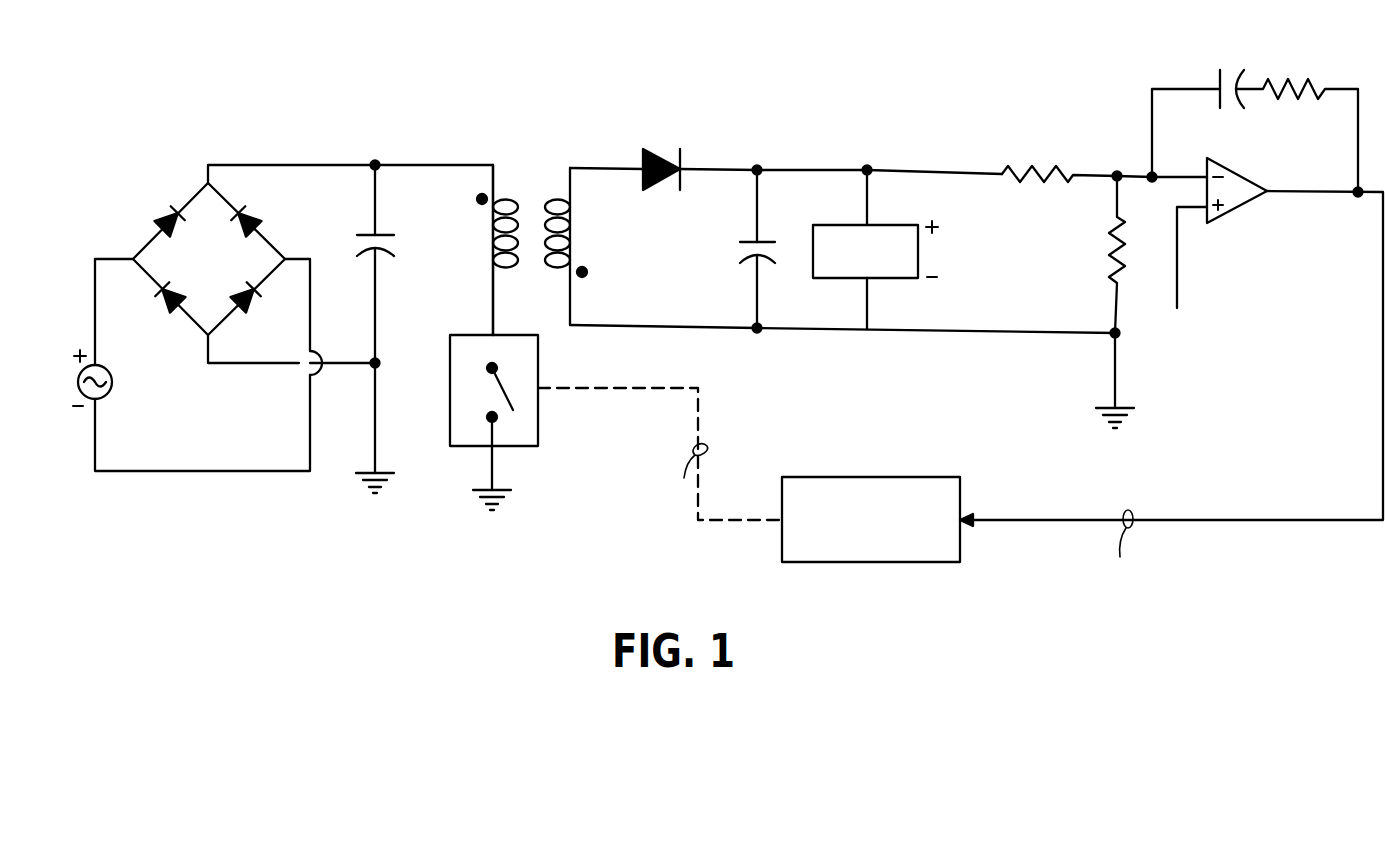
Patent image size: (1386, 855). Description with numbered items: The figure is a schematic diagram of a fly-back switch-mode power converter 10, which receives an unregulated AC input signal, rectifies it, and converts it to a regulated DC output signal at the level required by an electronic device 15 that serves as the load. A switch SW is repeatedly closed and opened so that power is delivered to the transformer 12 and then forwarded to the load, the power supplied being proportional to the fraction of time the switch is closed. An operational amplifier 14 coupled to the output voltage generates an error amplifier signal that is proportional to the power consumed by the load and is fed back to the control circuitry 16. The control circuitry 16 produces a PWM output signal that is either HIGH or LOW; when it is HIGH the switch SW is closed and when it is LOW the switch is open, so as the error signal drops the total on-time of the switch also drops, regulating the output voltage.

The fly-back switch-mode power converter 10 is at (203, 101).
The transformer 12 is at (522, 190).
The operational amplifier 14 is at (1235, 210).
The electronic device 15 is at (835, 224).
The control circuitry 16 is at (876, 477).